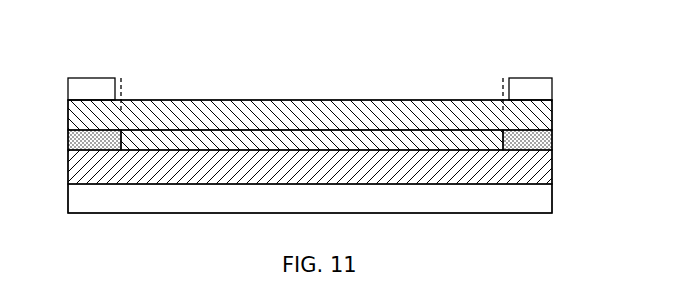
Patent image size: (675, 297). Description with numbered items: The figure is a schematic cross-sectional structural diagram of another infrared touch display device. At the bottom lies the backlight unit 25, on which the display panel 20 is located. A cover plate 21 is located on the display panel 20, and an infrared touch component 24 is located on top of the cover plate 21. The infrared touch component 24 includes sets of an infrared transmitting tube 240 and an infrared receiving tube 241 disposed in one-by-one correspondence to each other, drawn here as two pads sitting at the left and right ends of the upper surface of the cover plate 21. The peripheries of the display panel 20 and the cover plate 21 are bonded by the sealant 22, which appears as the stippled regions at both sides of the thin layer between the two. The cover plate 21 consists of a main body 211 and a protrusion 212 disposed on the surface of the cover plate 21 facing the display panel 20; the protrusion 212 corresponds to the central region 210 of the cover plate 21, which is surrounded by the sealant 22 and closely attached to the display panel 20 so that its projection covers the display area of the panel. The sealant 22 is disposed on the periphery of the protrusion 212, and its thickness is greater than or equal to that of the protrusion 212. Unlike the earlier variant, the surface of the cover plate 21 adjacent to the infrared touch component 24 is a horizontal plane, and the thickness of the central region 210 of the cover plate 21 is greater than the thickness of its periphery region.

The display panel 20 is at (543, 177).
The cover plate 21 is at (547, 115).
The sealant 22 is at (552, 146).
The infrared touch component 24 is at (345, 61).
The backlight unit 25 is at (540, 203).
The central region 210 is at (503, 82).
The main body 211 is at (78, 120).
The protrusion 212 is at (138, 136).
The infrared transmitting tube 240 is at (75, 80).
The infrared receiving tube 241 is at (527, 86).